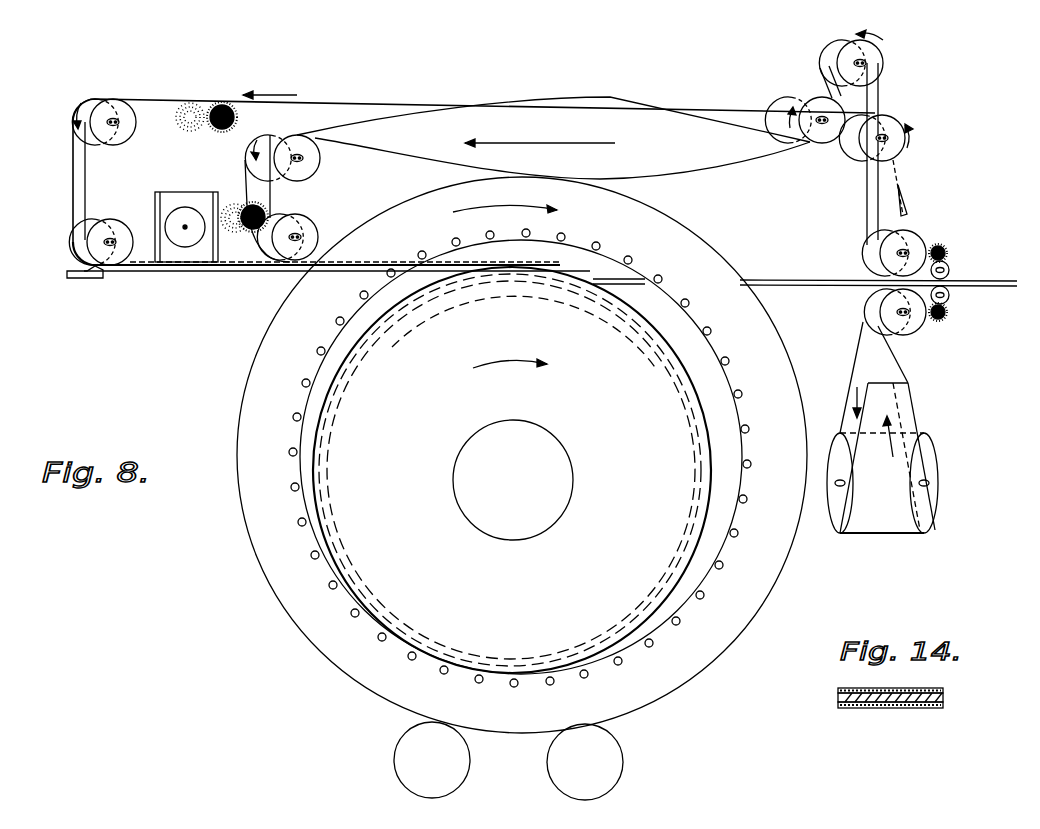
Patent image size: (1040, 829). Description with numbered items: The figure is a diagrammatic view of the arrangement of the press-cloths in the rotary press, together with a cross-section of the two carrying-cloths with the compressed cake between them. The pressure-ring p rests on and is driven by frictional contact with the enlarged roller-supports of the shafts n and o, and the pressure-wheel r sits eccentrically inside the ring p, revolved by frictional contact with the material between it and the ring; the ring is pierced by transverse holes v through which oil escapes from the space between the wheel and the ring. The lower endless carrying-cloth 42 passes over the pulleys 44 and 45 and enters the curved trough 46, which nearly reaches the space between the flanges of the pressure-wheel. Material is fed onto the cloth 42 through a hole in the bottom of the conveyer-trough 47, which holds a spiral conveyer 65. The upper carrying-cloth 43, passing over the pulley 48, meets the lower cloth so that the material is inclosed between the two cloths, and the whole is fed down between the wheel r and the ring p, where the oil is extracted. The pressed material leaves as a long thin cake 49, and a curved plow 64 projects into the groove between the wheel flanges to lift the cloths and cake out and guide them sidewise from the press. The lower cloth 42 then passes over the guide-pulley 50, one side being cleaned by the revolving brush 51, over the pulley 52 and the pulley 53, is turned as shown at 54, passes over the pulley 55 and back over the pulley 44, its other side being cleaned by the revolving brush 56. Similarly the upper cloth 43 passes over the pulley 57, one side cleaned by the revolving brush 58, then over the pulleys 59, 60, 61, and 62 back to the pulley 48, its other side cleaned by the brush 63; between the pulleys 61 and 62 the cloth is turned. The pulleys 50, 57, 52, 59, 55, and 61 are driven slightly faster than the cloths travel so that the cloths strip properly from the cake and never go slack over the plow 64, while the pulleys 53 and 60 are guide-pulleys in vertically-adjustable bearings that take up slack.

In FIG. 8, the lower endless carrying-cloth 42 is at (77, 203).
In FIG. 14, the lower endless carrying-cloth 42 is at (900, 708).
In FIG. 8, the upper carrying-cloth 43 is at (270, 193).
In FIG. 14, the upper carrying-cloth 43 is at (935, 678).
In FIG. 8, the pulley 44 is at (93, 125).
In FIG. 8, the pulley 45 is at (80, 260).
In FIG. 8, the trough 46 is at (104, 274).
In FIG. 8, the conveyer-trough 47 is at (156, 200).
In FIG. 8, the pulley 48 is at (317, 226).
In FIG. 8, the cake 49 is at (995, 288).
In FIG. 14, the cake 49 is at (944, 697).
In FIG. 8, the guide-pulley 50 is at (951, 298).
In FIG. 8, the revolving brush 51 is at (946, 318).
In FIG. 8, the pulley 52 is at (910, 332).
In FIG. 8, the pulley 53 is at (937, 503).
In FIG. 8, the turn of the cloth 54 is at (911, 210).
In FIG. 8, the pulley 55 is at (908, 140).
In FIG. 8, the revolving brush 56 is at (195, 120).
In FIG. 8, the pulley 57 is at (951, 270).
In FIG. 8, the revolving brush 58 is at (947, 249).
In FIG. 8, the pulley 59 is at (914, 236).
In FIG. 8, the pulley 60 is at (877, 55).
In FIG. 8, the pulley 61 is at (830, 148).
In FIG. 8, the pulley 62 is at (321, 159).
In FIG. 8, the brush 63 is at (247, 200).
In FIG. 8, the curved plow 64 is at (567, 282).
In FIG. 8, the spiral conveyer 65 is at (193, 242).
In FIG. 8, the pressure-ring p is at (783, 538).
In FIG. 8, the pressure-wheel r is at (340, 472).
In FIG. 8, the transverse holes v is at (303, 533).
In FIG. 8, the shaft n is at (432, 760).
In FIG. 8, the shaft o is at (585, 762).